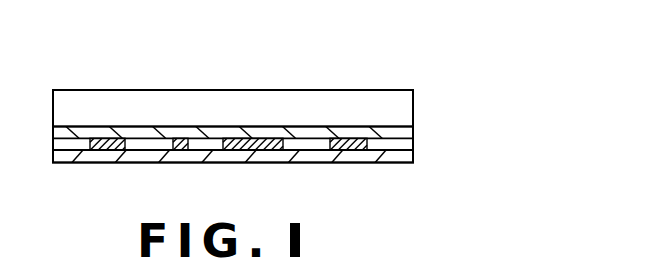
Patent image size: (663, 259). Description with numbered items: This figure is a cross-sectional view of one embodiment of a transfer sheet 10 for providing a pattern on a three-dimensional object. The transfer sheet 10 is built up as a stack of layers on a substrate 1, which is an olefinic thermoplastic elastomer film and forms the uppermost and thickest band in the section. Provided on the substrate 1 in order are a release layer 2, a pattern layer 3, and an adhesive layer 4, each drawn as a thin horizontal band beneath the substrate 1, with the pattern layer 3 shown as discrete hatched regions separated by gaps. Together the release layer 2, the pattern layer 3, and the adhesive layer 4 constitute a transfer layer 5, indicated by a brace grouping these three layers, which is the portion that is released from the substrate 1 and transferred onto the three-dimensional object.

The transfer sheet 10 is at (351, 78).
The substrate 1 is at (402, 107).
The release layer 2 is at (413, 133).
The pattern layer 3 is at (413, 143).
The adhesive layer 4 is at (398, 163).
The transfer layer 5 is at (493, 90).